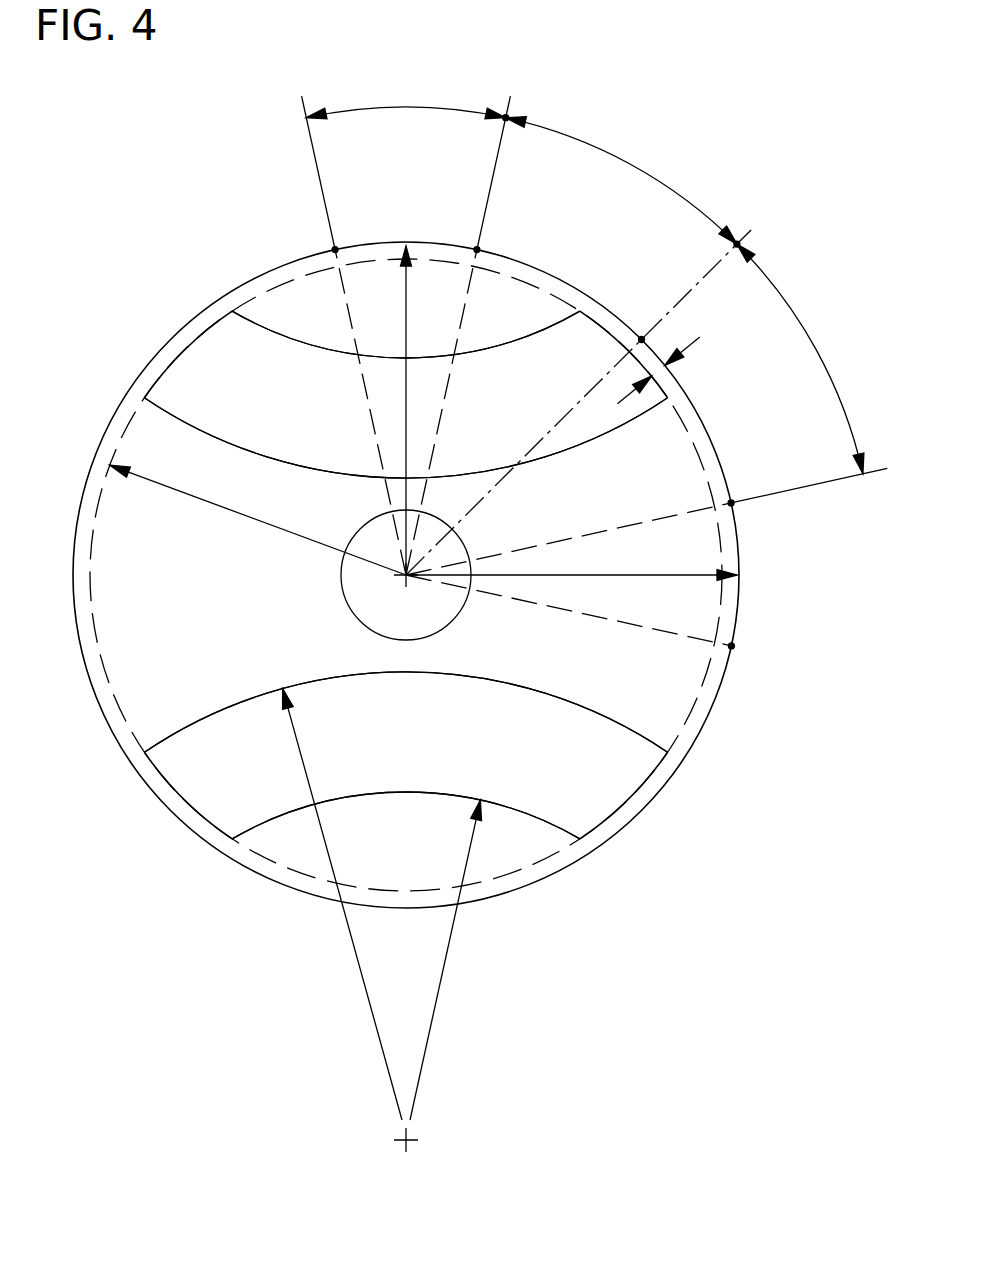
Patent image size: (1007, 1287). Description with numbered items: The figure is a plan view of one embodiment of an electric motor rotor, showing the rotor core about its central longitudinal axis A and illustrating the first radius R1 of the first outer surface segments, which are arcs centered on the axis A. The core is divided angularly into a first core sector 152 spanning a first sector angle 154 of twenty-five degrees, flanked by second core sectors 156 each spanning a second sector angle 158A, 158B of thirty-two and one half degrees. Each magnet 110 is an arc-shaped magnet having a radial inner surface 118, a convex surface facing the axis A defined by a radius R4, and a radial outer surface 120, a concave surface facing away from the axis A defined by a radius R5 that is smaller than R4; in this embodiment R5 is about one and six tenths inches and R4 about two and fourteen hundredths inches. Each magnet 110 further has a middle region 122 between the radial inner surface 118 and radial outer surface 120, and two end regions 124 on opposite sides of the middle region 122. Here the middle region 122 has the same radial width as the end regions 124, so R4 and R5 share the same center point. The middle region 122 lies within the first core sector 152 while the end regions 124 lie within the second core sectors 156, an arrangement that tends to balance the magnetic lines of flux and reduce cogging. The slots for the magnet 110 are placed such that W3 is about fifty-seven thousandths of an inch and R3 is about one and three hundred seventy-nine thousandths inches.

The magnet 110 is at (313, 414).
The radial inner surface 118 is at (275, 460).
The radial outer surface 120 is at (293, 338).
The middle region 122 is at (390, 357).
The end regions 124 is at (212, 368).
The first core sector 152 is at (488, 232).
The first sector angle 154 is at (398, 108).
The second core sector 156 is at (648, 330).
The second sector angle 158A is at (650, 170).
The second sector angle 158B is at (822, 355).
The magnet slot placement dimension W3 is at (682, 361).
The first radius R1 is at (407, 281).
The magnet slot radius R3 is at (200, 498).
The inner surface radius R4 is at (303, 762).
The outer surface radius R5 is at (445, 960).
The central longitudinal axis A is at (404, 575).